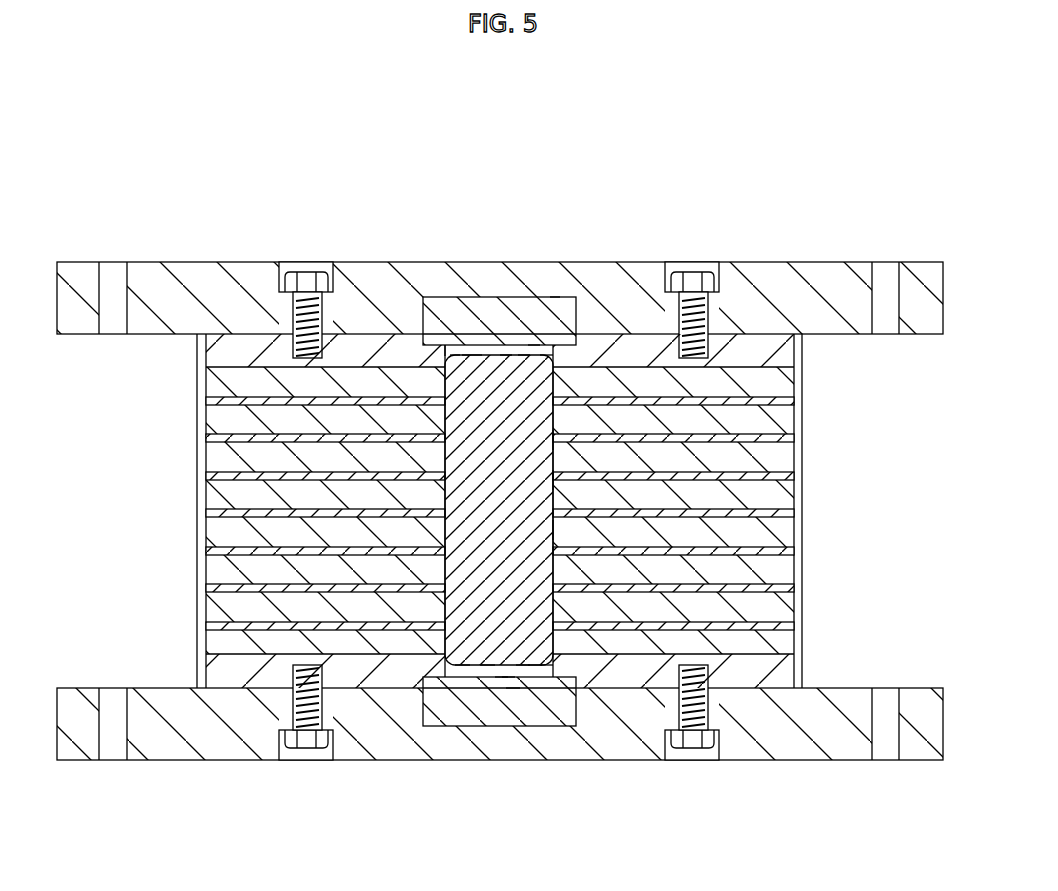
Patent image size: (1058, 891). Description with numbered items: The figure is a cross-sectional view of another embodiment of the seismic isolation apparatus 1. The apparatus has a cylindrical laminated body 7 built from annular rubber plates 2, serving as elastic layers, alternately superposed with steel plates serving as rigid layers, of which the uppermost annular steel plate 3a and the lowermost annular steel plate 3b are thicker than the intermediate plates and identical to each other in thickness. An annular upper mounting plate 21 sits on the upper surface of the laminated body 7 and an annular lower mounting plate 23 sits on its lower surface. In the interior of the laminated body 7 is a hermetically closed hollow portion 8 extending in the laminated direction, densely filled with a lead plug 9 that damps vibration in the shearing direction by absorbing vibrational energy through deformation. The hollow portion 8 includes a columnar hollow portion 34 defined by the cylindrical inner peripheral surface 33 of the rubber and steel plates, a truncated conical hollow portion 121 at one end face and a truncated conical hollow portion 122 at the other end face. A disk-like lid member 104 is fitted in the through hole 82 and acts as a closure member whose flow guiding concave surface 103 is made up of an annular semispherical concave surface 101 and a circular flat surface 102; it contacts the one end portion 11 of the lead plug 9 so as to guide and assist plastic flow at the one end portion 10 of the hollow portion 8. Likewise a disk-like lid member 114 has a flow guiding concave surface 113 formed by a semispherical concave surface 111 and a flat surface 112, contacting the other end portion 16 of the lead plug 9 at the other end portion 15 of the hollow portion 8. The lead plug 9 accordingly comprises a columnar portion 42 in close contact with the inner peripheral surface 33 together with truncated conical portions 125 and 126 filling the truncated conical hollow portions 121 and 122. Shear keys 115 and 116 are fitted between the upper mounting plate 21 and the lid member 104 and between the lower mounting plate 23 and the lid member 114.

The seismic isolation apparatus 1 is at (807, 436).
The annular rubber plates 2 is at (230, 418).
The uppermost annular steel plate 3a is at (755, 352).
The lowermost annular steel plate 3b is at (772, 665).
The cylindrical laminated body 7 is at (184, 578).
The hollow portion 8 is at (488, 547).
The lead plug 9 is at (483, 491).
The one end portion of the hollow portion 10 is at (490, 358).
The one end portion of the lead plug 11 is at (457, 358).
The other end portion of the hollow portion 15 is at (445, 664).
The other end portion of the lead plug 16 is at (462, 672).
The annular upper mounting plate 21 is at (196, 278).
The annular lower mounting plate 23 is at (790, 748).
The cylindrical inner peripheral surface 33 is at (540, 530).
The columnar hollow portion 34 is at (521, 478).
The columnar portion 42 is at (513, 447).
The through hole 82 is at (533, 350).
The semispherical concave surface 101 is at (468, 360).
The circular flat surface 102 is at (506, 358).
The flow guiding concave surface 103 is at (556, 308).
The disk-like lid member 104 is at (445, 352).
The semispherical concave surface 111 is at (535, 672).
The flat surface 112 is at (508, 690).
The flow guiding concave surface 113 is at (488, 680).
The disk-like lid member 114 is at (500, 690).
The shear key 115 is at (545, 365).
The shear key 116 is at (548, 672).
The truncated conical hollow portion 121 is at (477, 358).
The truncated conical hollow portion 122 is at (512, 700).
The truncated conical portion 125 is at (524, 358).
The truncated conical portion 126 is at (522, 680).